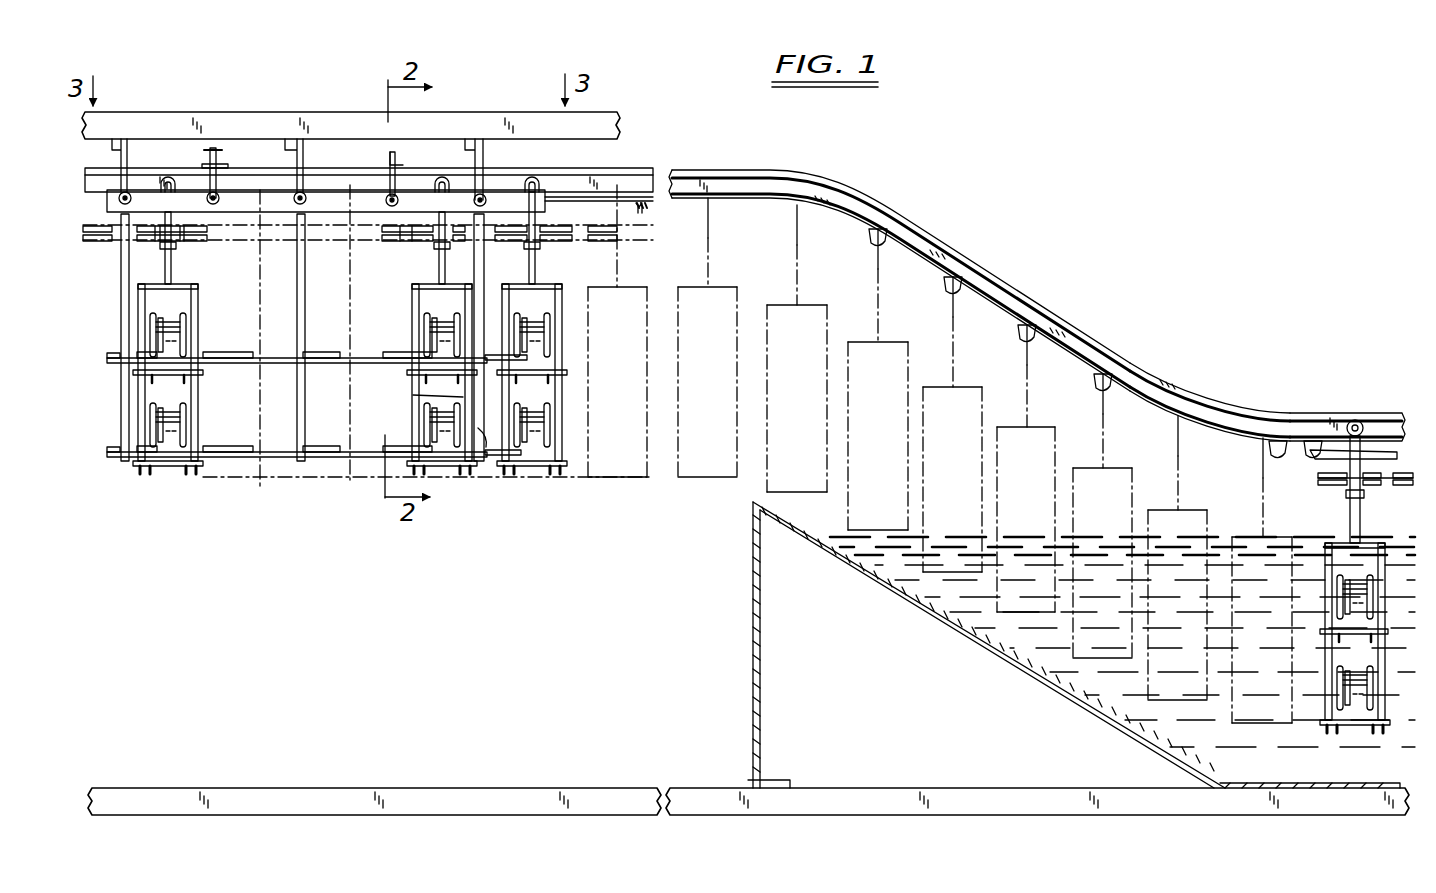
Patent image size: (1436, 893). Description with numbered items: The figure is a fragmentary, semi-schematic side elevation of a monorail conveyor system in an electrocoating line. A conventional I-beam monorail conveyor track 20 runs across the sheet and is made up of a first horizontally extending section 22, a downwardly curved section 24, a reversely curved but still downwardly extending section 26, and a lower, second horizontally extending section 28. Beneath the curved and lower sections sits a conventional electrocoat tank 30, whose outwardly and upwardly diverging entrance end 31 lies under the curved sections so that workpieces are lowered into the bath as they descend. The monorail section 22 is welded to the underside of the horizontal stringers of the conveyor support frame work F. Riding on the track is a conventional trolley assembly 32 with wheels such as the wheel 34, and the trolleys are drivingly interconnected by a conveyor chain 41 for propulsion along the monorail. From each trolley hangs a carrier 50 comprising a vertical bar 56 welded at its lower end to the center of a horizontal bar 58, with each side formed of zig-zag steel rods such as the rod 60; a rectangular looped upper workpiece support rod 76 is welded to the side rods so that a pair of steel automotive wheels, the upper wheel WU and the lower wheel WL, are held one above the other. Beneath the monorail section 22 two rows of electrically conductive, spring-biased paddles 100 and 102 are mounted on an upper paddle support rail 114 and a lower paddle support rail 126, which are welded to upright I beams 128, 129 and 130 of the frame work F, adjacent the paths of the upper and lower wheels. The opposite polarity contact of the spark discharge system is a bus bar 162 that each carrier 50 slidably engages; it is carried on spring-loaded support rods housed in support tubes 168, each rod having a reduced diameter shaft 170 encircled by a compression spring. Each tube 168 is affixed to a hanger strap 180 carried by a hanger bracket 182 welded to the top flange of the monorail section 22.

The I-beam monorail conveyor track 20 is at (663, 153).
The first horizontally extending section 22 is at (567, 166).
The downwardly curved section 24 is at (887, 211).
The reversely curved section 26 is at (1208, 386).
The second horizontally extending section 28 is at (1375, 408).
The electrocoat tank 30 is at (750, 615).
The entrance end 31 is at (787, 517).
The trolley assembly 32 is at (155, 217).
The wheel or roller 34 is at (533, 178).
The conveyor chain 41 is at (1328, 487).
The carrier 50 is at (205, 291).
The bar 56 is at (528, 266).
The horizontal bar 58 is at (549, 283).
The steel rod 60 is at (413, 395).
The upper workpiece support rod 76 is at (568, 369).
The paddle 100 is at (228, 349).
The paddle 102 is at (330, 434).
The upper paddle support rail 114 is at (232, 366).
The lower paddle support rail 126 is at (232, 458).
The upright I beam 128 is at (120, 316).
The upright I beam 129 is at (302, 342).
The upright I beam 130 is at (487, 458).
The bus bar 162 is at (330, 189).
The support tube 168 is at (297, 193).
The reduced diameter shaft 170 is at (208, 196).
The hanger strap 180 is at (207, 158).
The hanger bracket 182 is at (221, 160).
The conveyor support frame work F is at (288, 108).
The upper wheel WU is at (553, 387).
The lower wheel WL is at (547, 480).